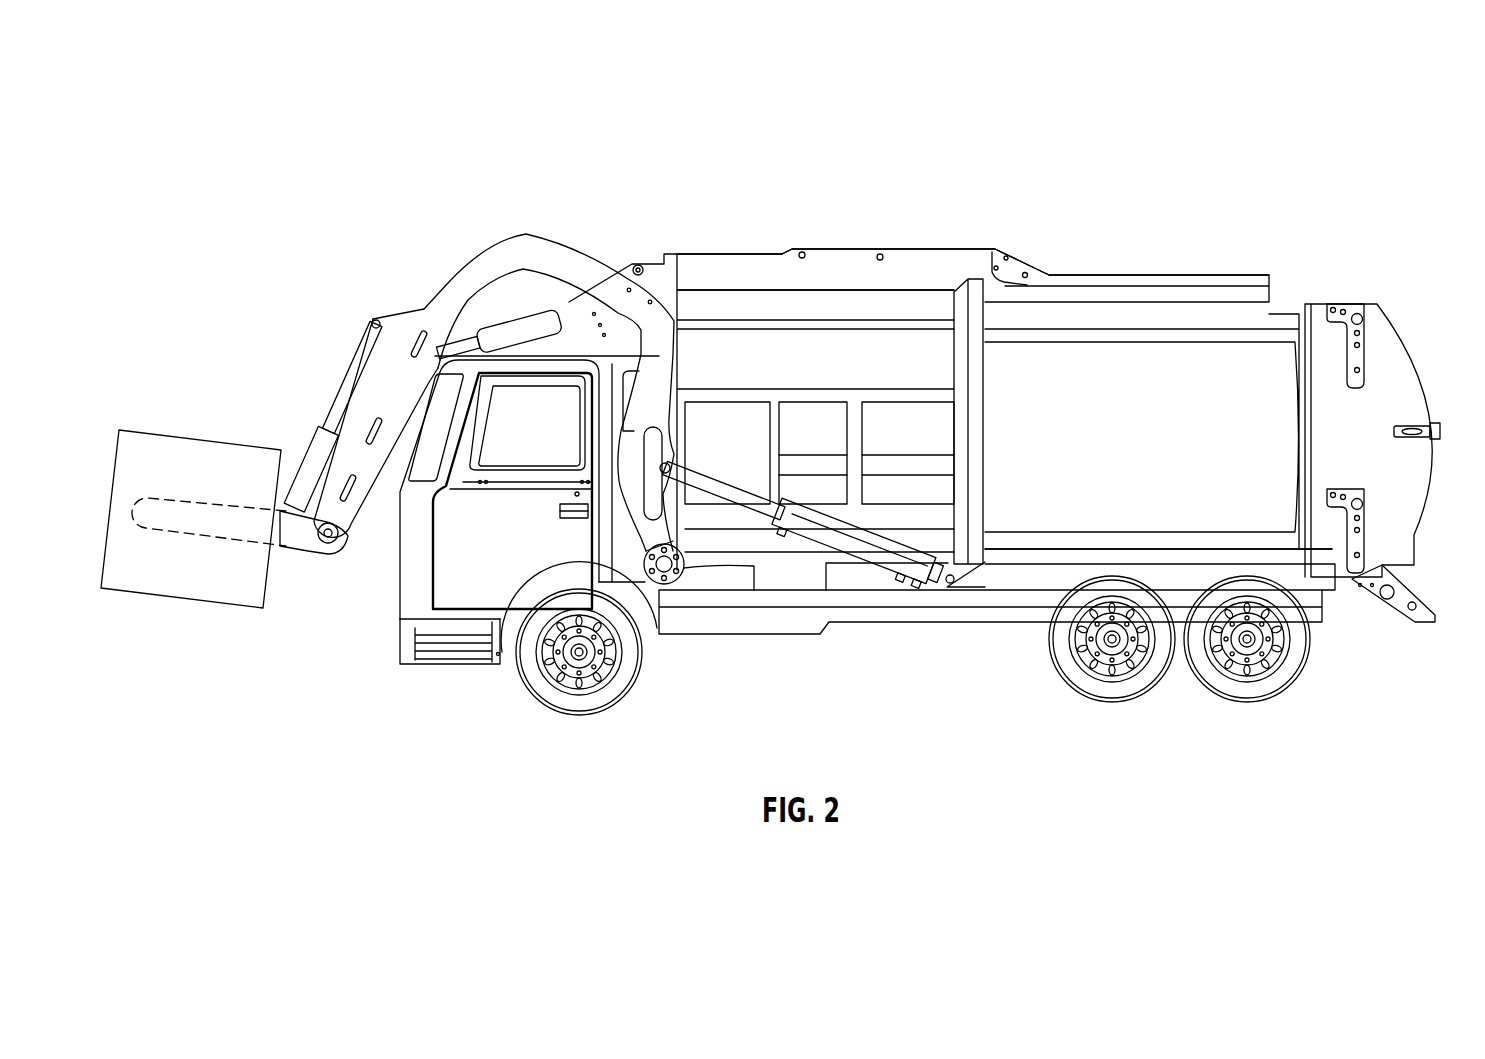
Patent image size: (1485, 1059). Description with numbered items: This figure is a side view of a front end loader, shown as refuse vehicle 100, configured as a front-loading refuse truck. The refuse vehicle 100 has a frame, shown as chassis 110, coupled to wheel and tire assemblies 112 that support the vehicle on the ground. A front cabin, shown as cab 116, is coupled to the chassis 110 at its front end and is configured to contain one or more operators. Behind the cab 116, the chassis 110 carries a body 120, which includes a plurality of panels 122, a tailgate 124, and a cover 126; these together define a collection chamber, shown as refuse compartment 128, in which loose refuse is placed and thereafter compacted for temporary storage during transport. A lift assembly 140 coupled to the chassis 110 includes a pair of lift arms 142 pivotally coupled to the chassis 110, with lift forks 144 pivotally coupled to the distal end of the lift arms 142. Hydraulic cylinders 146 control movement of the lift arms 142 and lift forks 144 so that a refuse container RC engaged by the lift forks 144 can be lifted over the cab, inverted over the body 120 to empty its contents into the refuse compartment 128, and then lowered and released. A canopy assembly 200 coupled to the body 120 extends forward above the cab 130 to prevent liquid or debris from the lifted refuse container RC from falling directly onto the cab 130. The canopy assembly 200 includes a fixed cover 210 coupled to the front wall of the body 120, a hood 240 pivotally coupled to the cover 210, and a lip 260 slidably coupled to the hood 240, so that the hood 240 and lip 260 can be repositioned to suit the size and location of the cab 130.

The refuse vehicle 100 is at (1213, 140).
The chassis 110 is at (897, 663).
The wheel and tire assemblies 112 is at (568, 720).
The cab 116 is at (400, 605).
The body 120 is at (1055, 212).
The panels 122 is at (1160, 446).
The tailgate 124 is at (1388, 360).
The cover 126 is at (878, 245).
The refuse compartment 128 is at (840, 217).
The cab 130 is at (445, 690).
The lift assembly 140 is at (523, 210).
The lift arms 142 is at (524, 244).
The lift forks 144 is at (202, 536).
The hydraulic cylinders 146 is at (348, 377).
The canopy assembly 200 is at (473, 223).
The cover 210 is at (643, 262).
The hood 240 is at (547, 323).
The lip 260 is at (446, 324).
The refuse container RC is at (193, 429).